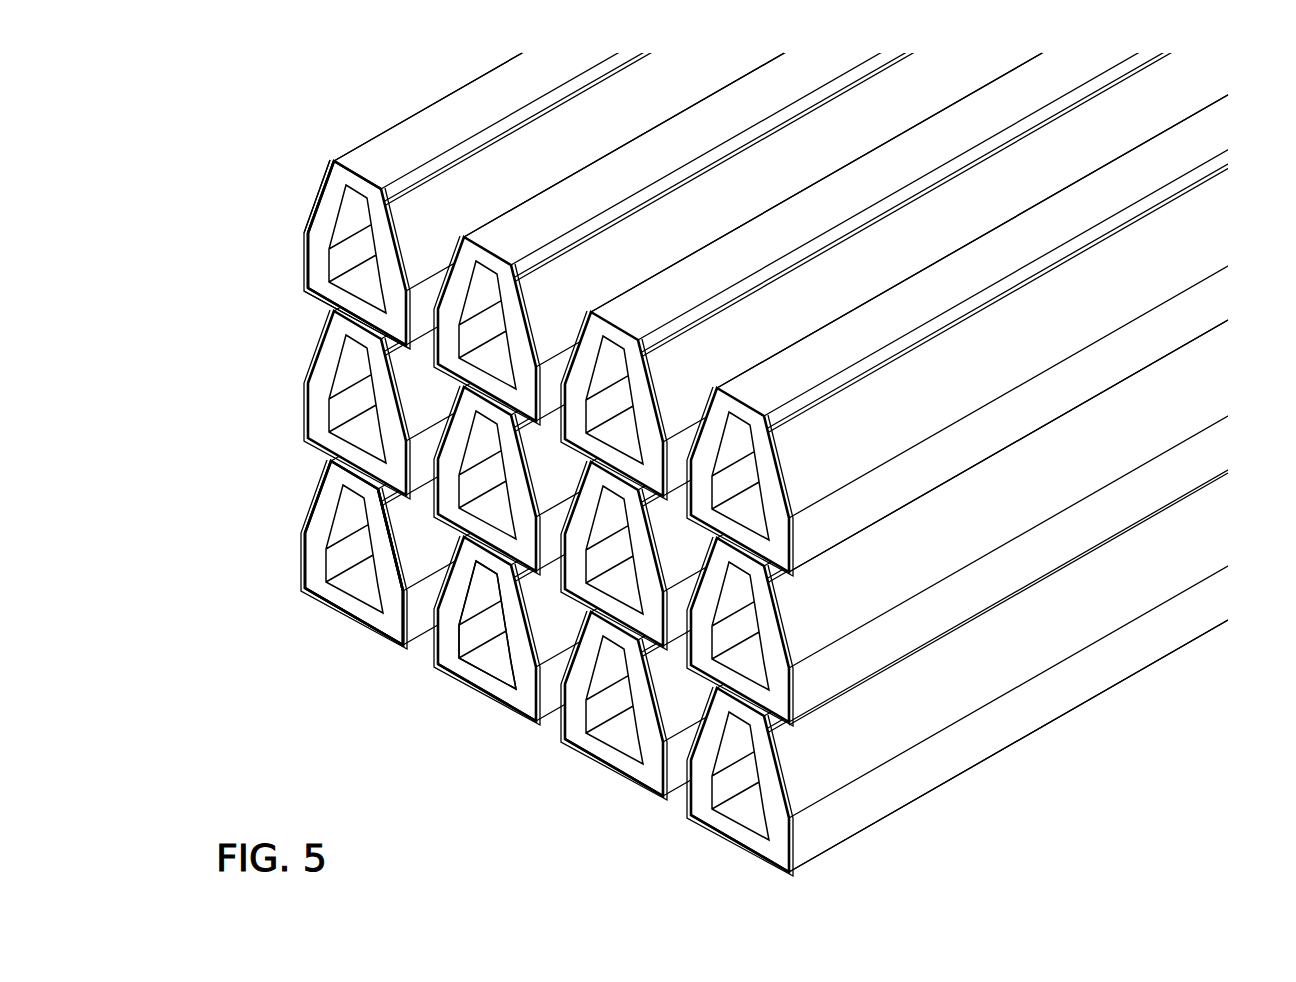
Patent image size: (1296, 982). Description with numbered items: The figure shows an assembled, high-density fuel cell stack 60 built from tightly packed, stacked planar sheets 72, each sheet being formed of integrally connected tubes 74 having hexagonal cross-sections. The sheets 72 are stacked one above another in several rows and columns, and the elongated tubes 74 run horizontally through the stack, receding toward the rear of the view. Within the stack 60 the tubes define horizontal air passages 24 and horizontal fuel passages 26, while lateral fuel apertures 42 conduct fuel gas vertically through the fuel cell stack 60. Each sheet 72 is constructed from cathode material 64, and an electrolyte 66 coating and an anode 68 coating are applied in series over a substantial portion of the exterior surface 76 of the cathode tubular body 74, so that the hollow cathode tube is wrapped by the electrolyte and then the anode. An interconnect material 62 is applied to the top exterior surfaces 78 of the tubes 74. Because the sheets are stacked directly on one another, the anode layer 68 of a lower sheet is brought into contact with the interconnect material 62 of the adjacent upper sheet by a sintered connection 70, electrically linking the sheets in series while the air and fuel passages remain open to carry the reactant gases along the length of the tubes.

The fuel cell stack 60 is at (190, 178).
The interconnect material 62 is at (336, 160).
The cathode material 64 is at (325, 210).
The electrolyte coating 66 is at (315, 225).
The anode coating 68 is at (303, 270).
The exterior surface 76 is at (317, 303).
The sintered connection 70 is at (343, 337).
The top exterior surfaces 78 is at (844, 356).
The planar sheets 72 is at (1071, 621).
The horizontal fuel passages 26 is at (423, 532).
The lateral fuel apertures 42 is at (415, 635).
The horizontal air passages 24 is at (488, 655).
The tubes 74 is at (778, 845).